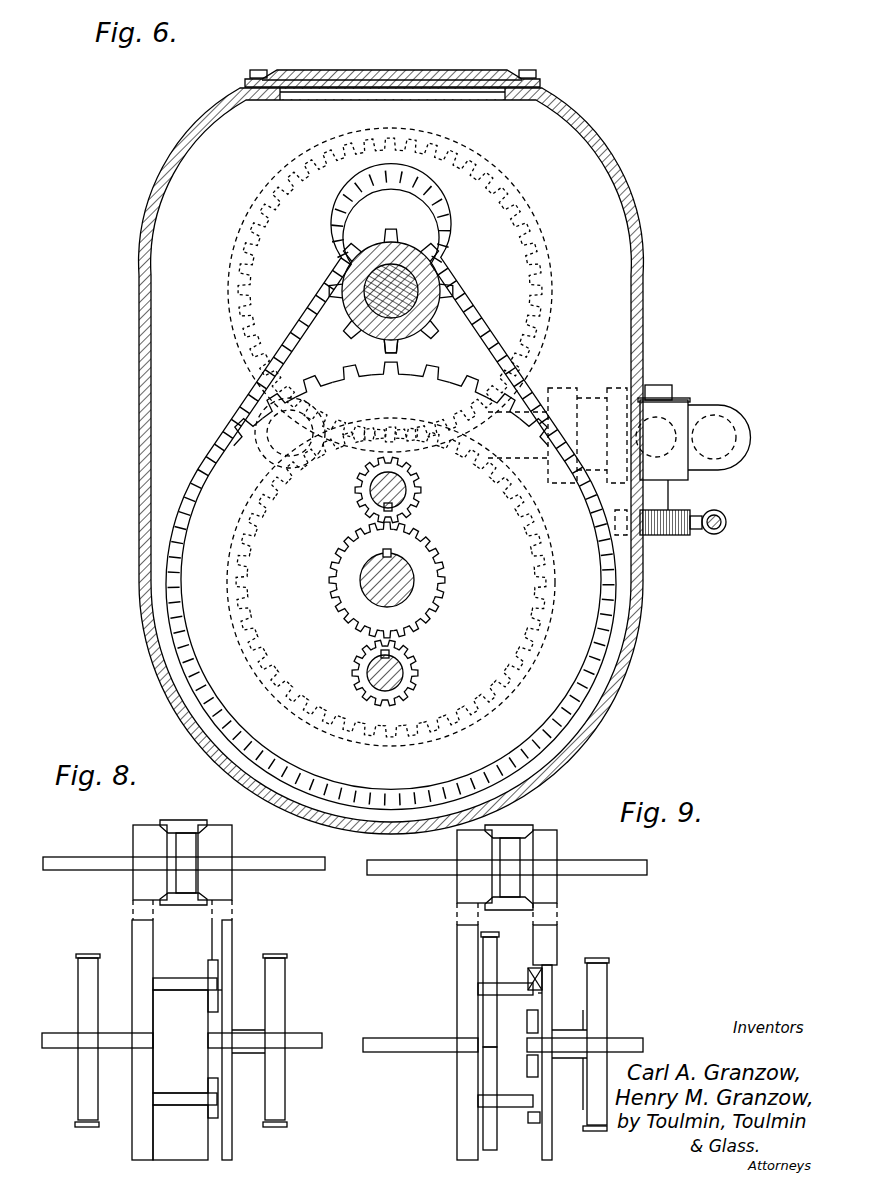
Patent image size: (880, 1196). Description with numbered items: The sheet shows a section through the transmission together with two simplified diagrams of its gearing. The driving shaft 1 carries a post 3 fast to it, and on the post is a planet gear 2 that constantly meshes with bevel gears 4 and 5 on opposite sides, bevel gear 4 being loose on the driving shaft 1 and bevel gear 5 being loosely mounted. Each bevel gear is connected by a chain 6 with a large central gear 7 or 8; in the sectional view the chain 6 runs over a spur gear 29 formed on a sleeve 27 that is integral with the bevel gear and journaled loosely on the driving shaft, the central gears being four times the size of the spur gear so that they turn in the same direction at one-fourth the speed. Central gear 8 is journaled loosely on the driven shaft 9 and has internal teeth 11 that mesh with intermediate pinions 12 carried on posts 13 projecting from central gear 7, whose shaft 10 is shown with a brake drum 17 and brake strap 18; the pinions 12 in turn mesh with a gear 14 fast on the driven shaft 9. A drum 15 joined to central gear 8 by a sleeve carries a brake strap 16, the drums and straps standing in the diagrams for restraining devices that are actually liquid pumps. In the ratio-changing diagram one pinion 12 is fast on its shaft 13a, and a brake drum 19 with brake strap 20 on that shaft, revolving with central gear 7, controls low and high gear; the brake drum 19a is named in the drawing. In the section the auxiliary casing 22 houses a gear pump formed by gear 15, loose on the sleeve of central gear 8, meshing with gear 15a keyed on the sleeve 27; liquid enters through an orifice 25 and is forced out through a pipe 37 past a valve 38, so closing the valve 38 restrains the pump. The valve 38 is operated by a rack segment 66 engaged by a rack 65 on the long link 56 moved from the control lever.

In FIG. 6, the driving shaft 1 is at (366, 292).
In FIG. 8, the driving shaft 1 is at (93, 862).
In FIG. 9, the driving shaft 1 is at (428, 871).
In FIG. 6, the planet gear 2 is at (365, 577).
In FIG. 8, the planet gear 2 is at (173, 826).
In FIG. 9, the planet gear 2 is at (512, 830).
In FIG. 8, the post 3 is at (184, 842).
In FIG. 9, the post 3 is at (510, 843).
In FIG. 8, the bevel gear 4 is at (147, 830).
In FIG. 9, the bevel gear 4 is at (457, 852).
In FIG. 8, the bevel gear 5 is at (214, 830).
In FIG. 9, the bevel gear 5 is at (553, 851).
In FIG. 6, the chain 6 is at (473, 326).
In FIG. 8, the chain 6 is at (133, 908).
In FIG. 9, the chain 6 is at (455, 917).
In FIG. 8, the central gear 7 is at (132, 941).
In FIG. 9, the central gear 7 is at (457, 981).
In FIG. 6, the central gear 8 is at (327, 387).
In FIG. 8, the central gear 8 is at (231, 958).
In FIG. 9, the central gear 8 is at (552, 968).
In FIG. 8, the driven shaft 9 is at (309, 1043).
In FIG. 9, the driven shaft 9 is at (624, 1045).
In FIG. 8, the shaft (axle extension) 10 is at (65, 1040).
In FIG. 9, the shaft (axle extension) 10 is at (437, 1053).
In FIG. 6, the internal teeth 11 is at (265, 540).
In FIG. 8, the internal teeth 11 is at (222, 965).
In FIG. 9, the internal teeth 11 is at (542, 965).
In FIG. 6, the intermediate pinion 12 is at (412, 492).
In FIG. 8, the intermediate pinion 12 is at (210, 962).
In FIG. 9, the intermediate pinion 12 is at (529, 978).
In FIG. 6, the post (shaft) 13 is at (407, 672).
In FIG. 8, the post (shaft) 13 is at (165, 990).
In FIG. 9, the post (shaft) 13 is at (514, 995).
In FIG. 6, the shaft 13a is at (375, 492).
In FIG. 6, the gear 14 is at (440, 560).
In FIG. 8, the gear 14 is at (208, 1022).
In FIG. 9, the gear 14 is at (530, 1031).
In FIG. 6, the drum (pump gear) 15 is at (542, 574).
In FIG. 8, the drum (pump gear) 15 is at (282, 1004).
In FIG. 9, the drum (pump gear) 15 is at (601, 985).
In FIG. 6, the pump gear 15a is at (523, 210).
In FIG. 8, the brake strap 16 is at (275, 956).
In FIG. 9, the brake strap 16 is at (600, 958).
In FIG. 8, the brake drum 17 is at (78, 992).
In FIG. 8, the brake strap 18 is at (88, 954).
In FIG. 9, the brake drum 19 is at (497, 956).
In FIG. 9, the disc lower part 19a is at (497, 1083).
In FIG. 9, the brake strap 20 is at (497, 936).
In FIG. 6, the auxiliary casing 22 is at (597, 152).
In FIG. 6, the orifice 25 is at (268, 452).
In FIG. 6, the sleeve 27 is at (399, 247).
In FIG. 6, the spur gear 29 is at (399, 343).
In FIG. 6, the pipe 37 is at (745, 425).
In FIG. 6, the valve 38 is at (665, 393).
In FIG. 6, the link 56 is at (728, 508).
In FIG. 6, the rack 65 is at (668, 536).
In FIG. 6, the rack segment 66 is at (692, 522).